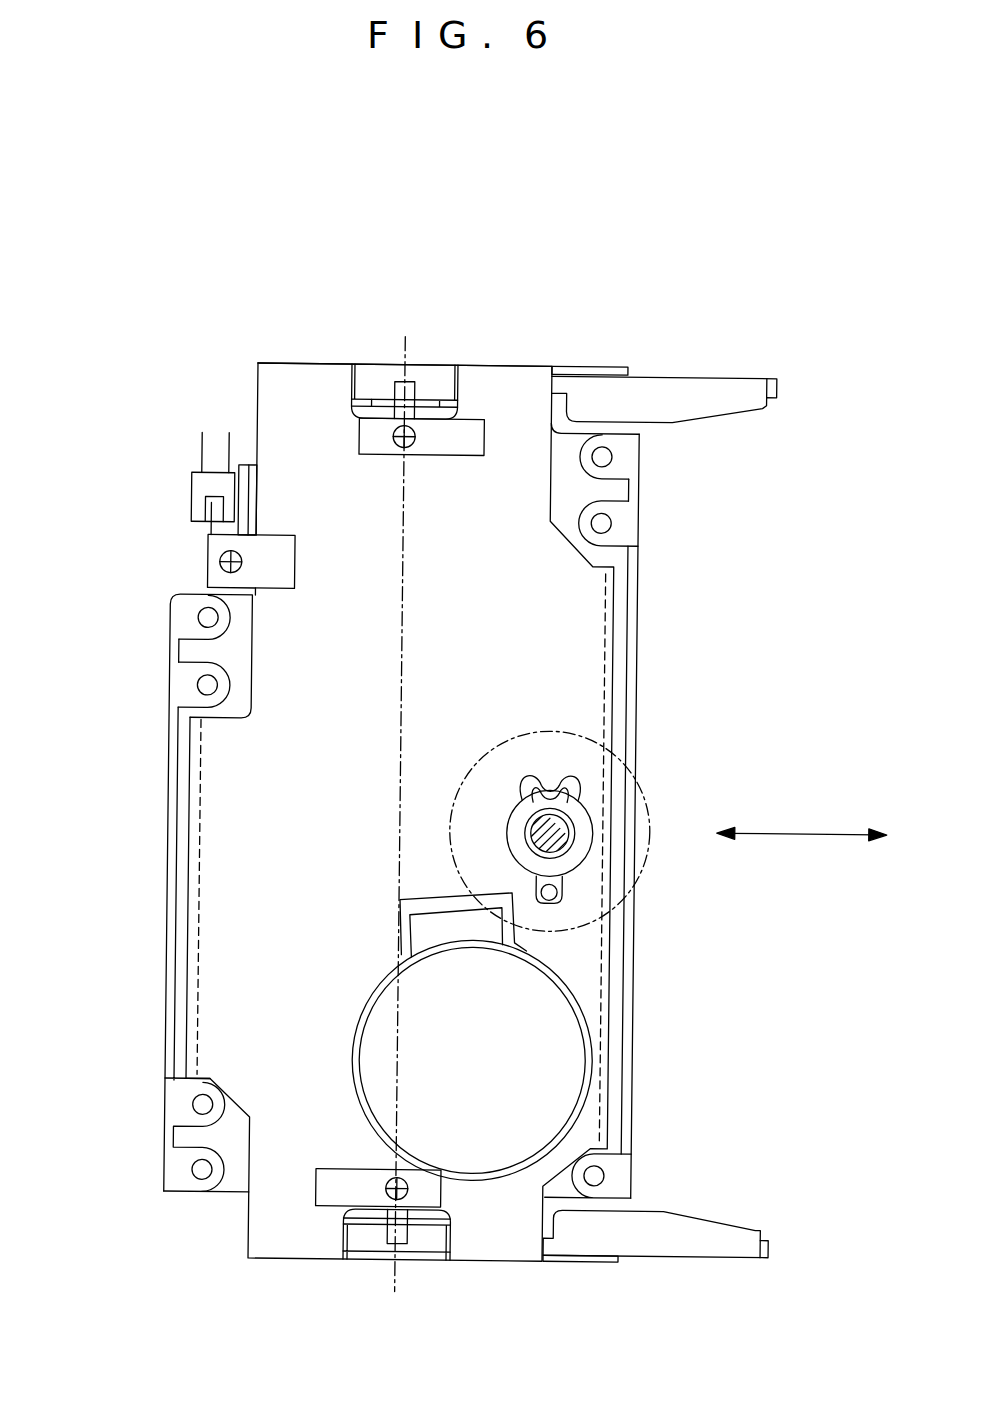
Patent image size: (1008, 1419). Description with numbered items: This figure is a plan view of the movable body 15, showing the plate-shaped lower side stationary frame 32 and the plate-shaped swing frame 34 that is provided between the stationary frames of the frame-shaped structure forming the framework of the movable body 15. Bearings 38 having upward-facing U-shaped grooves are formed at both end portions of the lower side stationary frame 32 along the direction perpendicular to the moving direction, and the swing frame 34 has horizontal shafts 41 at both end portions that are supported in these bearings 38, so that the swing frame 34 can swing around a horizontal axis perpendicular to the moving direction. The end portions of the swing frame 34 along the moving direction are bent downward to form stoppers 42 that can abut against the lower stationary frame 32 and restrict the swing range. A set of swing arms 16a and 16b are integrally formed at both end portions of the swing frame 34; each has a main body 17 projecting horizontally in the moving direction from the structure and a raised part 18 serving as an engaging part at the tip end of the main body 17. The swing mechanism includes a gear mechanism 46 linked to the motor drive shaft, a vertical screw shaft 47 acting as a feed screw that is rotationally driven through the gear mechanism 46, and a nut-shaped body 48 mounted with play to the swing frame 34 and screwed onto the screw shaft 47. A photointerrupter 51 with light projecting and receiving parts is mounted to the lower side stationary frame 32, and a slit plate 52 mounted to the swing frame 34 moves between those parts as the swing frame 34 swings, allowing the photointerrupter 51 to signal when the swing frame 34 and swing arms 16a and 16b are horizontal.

The movable body 15 is at (168, 412).
The swing arm 16a is at (712, 360).
The swing arm 16b is at (697, 1262).
The main body 17 is at (657, 392).
The raised part 18 is at (780, 384).
The lower side stationary frame 32 is at (173, 880).
The swing frame 34 is at (270, 1232).
The bearing 38 is at (375, 386).
The shaft 41 is at (412, 386).
The stopper 42 is at (205, 793).
The gear mechanism 46 is at (555, 725).
The screw shaft 47 is at (562, 828).
The nut-shaped body 48 is at (577, 843).
The photointerrupter 51 is at (193, 487).
The slit plate 52 is at (213, 524).